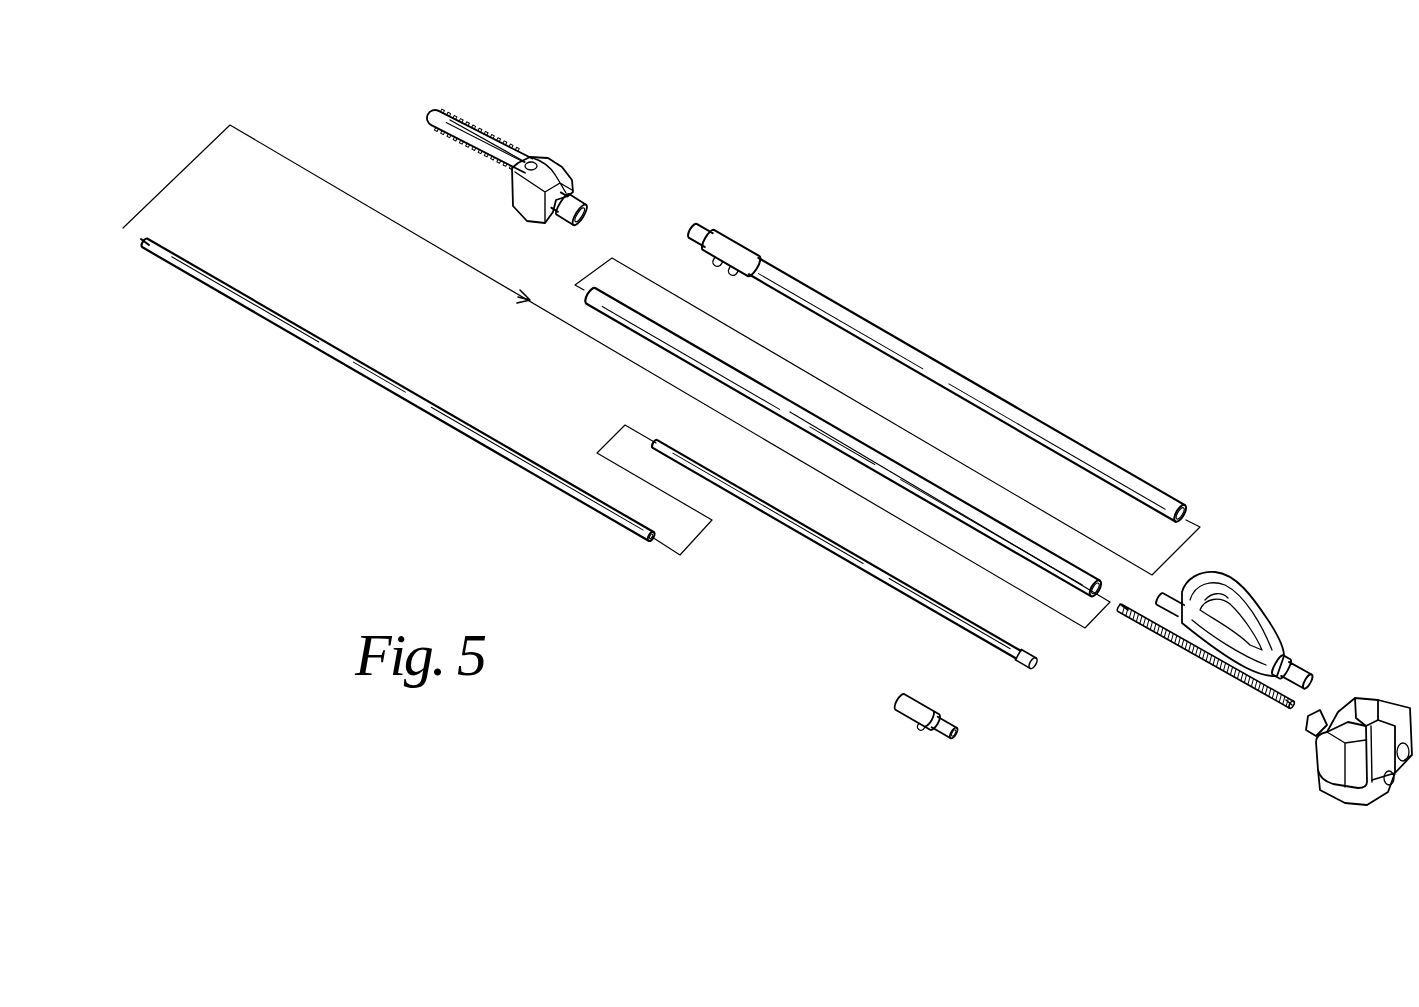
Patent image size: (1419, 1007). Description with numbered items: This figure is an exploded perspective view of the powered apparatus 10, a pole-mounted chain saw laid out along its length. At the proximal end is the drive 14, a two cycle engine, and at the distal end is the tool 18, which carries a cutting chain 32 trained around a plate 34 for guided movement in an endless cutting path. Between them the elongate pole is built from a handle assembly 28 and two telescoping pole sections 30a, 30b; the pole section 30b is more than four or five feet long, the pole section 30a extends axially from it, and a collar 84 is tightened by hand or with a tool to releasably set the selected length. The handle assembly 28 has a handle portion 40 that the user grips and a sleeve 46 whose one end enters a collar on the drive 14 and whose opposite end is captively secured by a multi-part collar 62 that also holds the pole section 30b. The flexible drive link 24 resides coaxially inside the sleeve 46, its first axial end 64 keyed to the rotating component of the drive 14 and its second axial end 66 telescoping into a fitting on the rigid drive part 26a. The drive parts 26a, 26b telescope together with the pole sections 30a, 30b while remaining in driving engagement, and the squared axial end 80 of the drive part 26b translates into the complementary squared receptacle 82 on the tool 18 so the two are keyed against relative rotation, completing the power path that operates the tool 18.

The powered apparatus 10 is at (1105, 369).
The drive 14 is at (1392, 703).
The tool 18 is at (548, 142).
The flexible drive link 24 is at (1205, 657).
The drive part 26a is at (846, 565).
The drive part 26b is at (415, 400).
The handle assembly 28 is at (1258, 593).
The pole section 30a is at (773, 388).
The pole section 30b is at (943, 370).
The cutting chain 32 is at (480, 130).
The plate 34 is at (497, 153).
The handle portion 40 is at (1236, 578).
The sleeve 46 is at (1305, 671).
The multi-part collar 62 is at (917, 722).
The first axial end 64 is at (1285, 702).
The second axial end 66 is at (1122, 612).
The axial end 80 is at (143, 240).
The receptacle 82 is at (582, 198).
The collar 84 is at (740, 240).